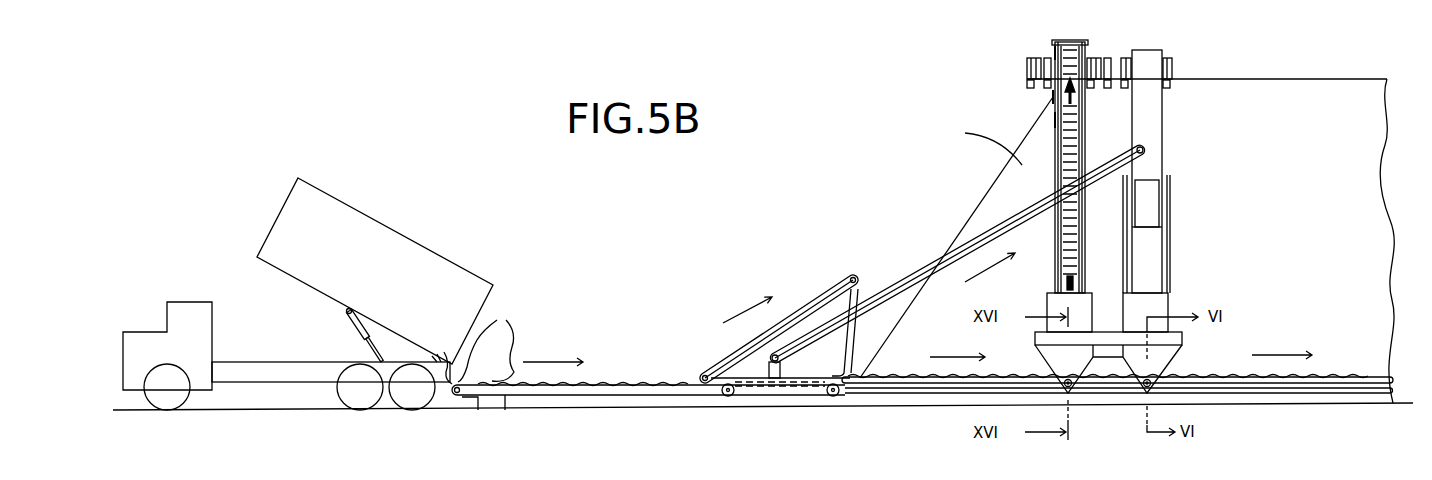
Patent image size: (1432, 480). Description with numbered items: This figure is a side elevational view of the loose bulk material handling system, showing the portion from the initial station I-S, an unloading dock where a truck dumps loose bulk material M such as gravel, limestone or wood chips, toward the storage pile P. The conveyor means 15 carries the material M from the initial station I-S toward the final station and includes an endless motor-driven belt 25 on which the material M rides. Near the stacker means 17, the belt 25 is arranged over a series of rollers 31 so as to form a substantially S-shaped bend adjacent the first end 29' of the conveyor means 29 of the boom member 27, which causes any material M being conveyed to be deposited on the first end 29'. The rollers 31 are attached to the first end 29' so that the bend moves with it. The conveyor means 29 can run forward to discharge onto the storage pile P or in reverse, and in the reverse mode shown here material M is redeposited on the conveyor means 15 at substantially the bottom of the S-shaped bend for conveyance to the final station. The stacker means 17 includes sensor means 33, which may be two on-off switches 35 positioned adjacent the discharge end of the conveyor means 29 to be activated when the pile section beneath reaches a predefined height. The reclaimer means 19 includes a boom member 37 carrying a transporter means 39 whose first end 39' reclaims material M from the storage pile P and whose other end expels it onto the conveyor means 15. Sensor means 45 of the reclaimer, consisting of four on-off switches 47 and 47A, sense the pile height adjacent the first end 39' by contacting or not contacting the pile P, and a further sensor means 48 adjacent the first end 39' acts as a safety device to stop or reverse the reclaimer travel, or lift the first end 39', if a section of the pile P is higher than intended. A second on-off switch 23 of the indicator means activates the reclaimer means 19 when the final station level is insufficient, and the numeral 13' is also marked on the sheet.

The conveyor means 15 is at (903, 401).
The endless motor-driven belt 25 is at (603, 397).
The rollers 31 is at (805, 292).
The first end of conveyor means 29' is at (790, 299).
The conveyor means 29 is at (1004, 243).
The transporter means 39 is at (956, 237).
The first end of transporter means 39' is at (1027, 30).
The reclaimer means 19 is at (1001, 120).
The stacker means 17 is at (1203, 176).
The boom member 27 is at (1173, 116).
The sensor means 33 is at (1191, 81).
The on-off switch 47A is at (1038, 78).
The sensor means 48 is at (1046, 75).
The on-off switches 35 is at (1118, 80).
The on-off switch 47 is at (1027, 85).
The sensor means 45 is at (1053, 97).
The boom member 37 is at (1045, 113).
The frame member 13' is at (1246, 10).
The second on-off switch 23 is at (1296, 0).
The storage pile P is at (1345, 107).
The loose bulk material M is at (1416, 313).
The initial station I-S is at (423, 163).